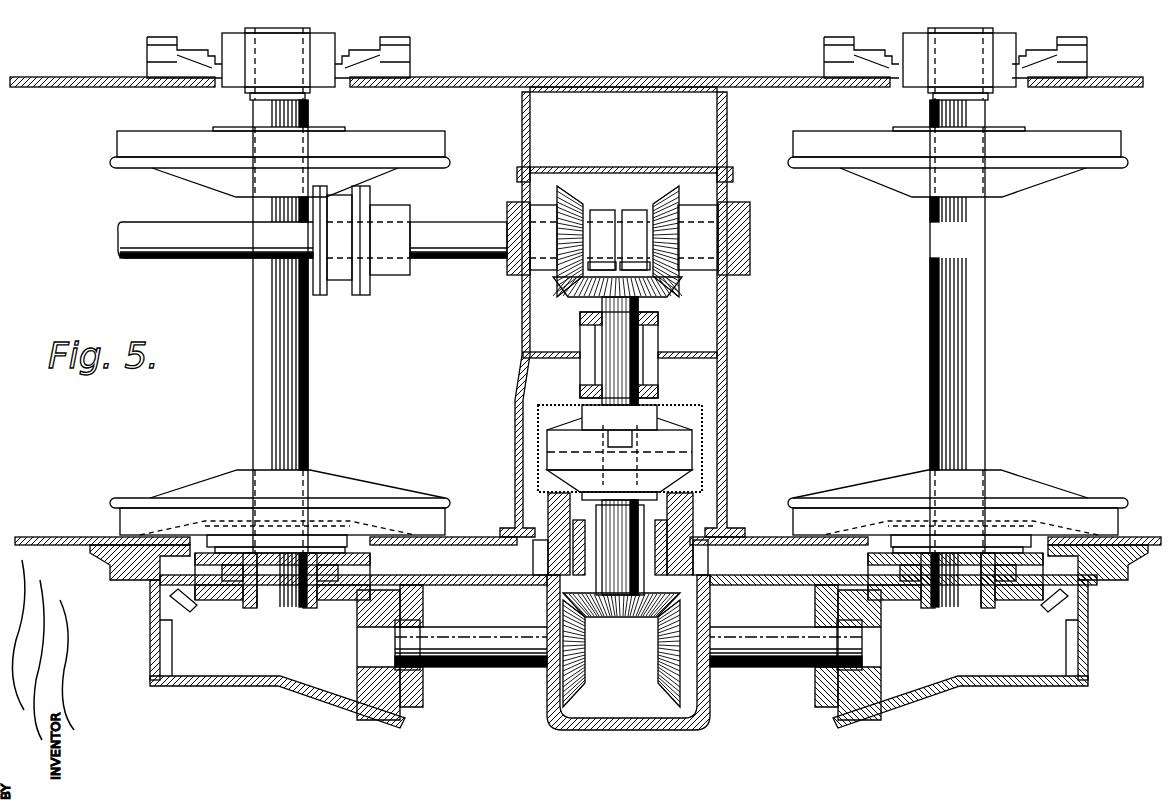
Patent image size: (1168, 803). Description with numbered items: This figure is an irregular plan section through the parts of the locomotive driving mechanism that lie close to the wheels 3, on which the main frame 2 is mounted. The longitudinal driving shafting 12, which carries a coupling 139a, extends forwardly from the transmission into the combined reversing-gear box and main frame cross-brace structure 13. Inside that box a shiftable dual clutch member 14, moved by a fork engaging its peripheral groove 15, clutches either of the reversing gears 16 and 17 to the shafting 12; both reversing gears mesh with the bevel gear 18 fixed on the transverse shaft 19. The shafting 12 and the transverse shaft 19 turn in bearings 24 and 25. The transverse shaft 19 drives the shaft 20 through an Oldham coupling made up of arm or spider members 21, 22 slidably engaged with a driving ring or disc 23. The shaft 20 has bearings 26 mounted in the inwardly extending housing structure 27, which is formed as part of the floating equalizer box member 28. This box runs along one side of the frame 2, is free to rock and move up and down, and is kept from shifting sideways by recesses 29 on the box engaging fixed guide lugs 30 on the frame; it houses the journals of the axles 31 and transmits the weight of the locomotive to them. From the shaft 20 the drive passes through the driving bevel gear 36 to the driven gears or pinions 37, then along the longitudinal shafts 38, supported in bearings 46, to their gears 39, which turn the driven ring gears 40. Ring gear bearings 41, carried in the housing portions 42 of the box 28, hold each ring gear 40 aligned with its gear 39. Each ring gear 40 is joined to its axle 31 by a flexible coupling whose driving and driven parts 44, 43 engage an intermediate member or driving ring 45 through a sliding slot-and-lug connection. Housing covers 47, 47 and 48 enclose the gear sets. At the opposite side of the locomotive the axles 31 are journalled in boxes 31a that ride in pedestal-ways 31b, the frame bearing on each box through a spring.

The main frame 2 is at (592, 77).
The wheels 3 is at (161, 138).
The shafting 12 is at (216, 250).
The combined reversing-gear box and main frame cross-brace structure 13 is at (522, 283).
The shiftable dual clutch member 14 is at (601, 212).
The peripheral groove 15 is at (620, 212).
The reversing gear 16 is at (571, 186).
The reversing gear 17 is at (665, 186).
The bevel gear 18 is at (660, 298).
The transverse shaft 19 is at (642, 372).
The shaft 20 is at (690, 556).
The arm or spider member 21 is at (590, 421).
The arm or spider member 22 is at (580, 476).
The driving ring or disc 23 is at (580, 444).
The bearings 24 is at (512, 213).
The bearings 25 is at (588, 319).
The bearings 26 is at (645, 523).
The inwardly extending housing structure 27 is at (560, 555).
The floating equalizer box member 28 is at (462, 577).
The recesses 29 is at (155, 580).
The fixed guide lugs 30 is at (118, 574).
The axles 31 is at (290, 391).
The boxes 31a is at (619, 64).
The pedestal-ways 31b is at (395, 52).
The driving bevel gear 36 is at (619, 617).
The driven gears or pinions 37 is at (656, 683).
The longitudinal shafts 38 is at (487, 668).
The gears 39 is at (372, 703).
The driven ring gears 40 is at (182, 612).
The ring gear bearings 41 is at (360, 566).
The housing portions 42 is at (372, 537).
The driven part 43 is at (310, 607).
The driving part 44 is at (236, 585).
The intermediate member or driving ring 45 is at (232, 560).
The bearings 46 is at (415, 627).
The housing covers 47 is at (282, 687).
The housing cover 48 is at (633, 731).
The coupling 139a is at (371, 290).